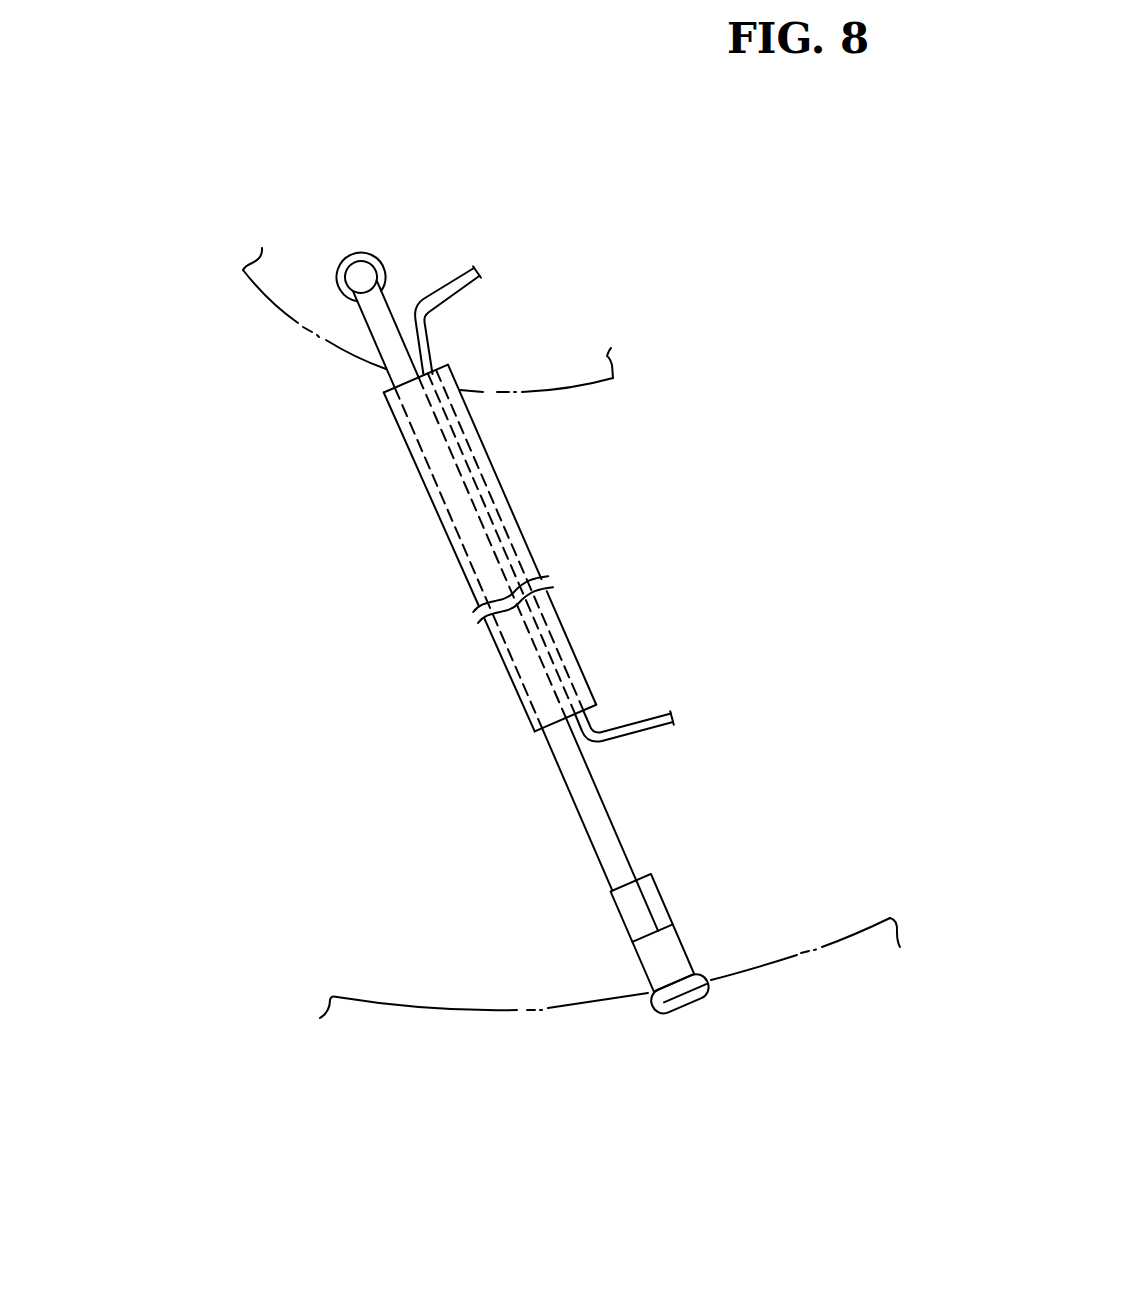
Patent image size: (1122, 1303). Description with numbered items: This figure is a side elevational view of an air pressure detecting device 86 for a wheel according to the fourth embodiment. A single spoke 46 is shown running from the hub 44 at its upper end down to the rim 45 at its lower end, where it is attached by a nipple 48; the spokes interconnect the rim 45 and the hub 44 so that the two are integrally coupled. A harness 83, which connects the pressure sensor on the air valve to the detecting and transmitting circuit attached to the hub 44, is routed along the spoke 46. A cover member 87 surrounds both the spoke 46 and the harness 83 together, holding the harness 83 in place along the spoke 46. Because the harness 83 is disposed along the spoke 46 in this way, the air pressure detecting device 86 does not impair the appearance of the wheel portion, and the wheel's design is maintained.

The air pressure detecting device 86 is at (243, 206).
The hub 44 is at (273, 307).
The rim 45 is at (440, 1006).
The spoke 46 is at (600, 792).
The nipple 48 is at (662, 897).
The harness 83 is at (638, 717).
The cover member 87 is at (517, 520).